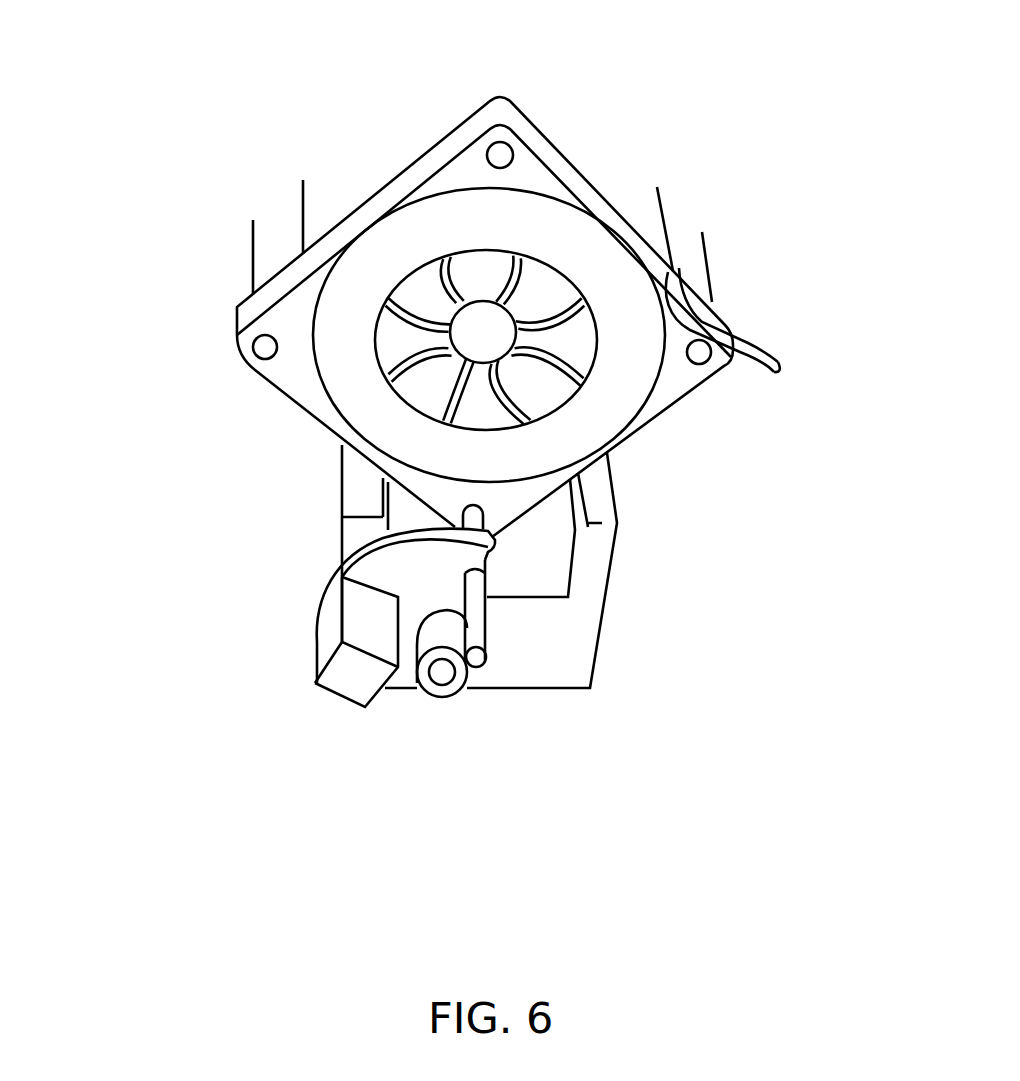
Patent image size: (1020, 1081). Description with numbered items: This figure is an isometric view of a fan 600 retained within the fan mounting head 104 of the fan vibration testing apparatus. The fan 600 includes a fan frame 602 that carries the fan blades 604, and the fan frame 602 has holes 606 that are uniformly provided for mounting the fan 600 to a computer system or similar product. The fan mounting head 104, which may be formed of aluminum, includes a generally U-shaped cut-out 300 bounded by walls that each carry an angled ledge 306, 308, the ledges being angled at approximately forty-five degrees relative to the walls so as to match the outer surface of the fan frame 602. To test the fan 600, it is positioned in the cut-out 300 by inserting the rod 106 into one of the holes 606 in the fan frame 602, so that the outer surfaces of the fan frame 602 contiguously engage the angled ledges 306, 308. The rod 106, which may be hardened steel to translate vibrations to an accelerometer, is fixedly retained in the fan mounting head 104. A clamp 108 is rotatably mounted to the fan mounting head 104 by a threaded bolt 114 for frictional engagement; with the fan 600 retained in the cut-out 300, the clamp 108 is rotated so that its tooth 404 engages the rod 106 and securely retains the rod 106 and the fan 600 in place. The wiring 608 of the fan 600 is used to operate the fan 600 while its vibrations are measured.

The fan 600 is at (357, 188).
The fan frame 602 is at (263, 380).
The fan blades 604 is at (517, 275).
The holes 606 is at (252, 343).
The wiring 608 is at (779, 358).
The cut-out 300 is at (543, 580).
The angled ledge 306 is at (583, 528).
The angled ledge 308 is at (382, 505).
The fan mounting head 104 is at (598, 657).
The clamp 108 is at (322, 592).
The tooth 404 is at (460, 572).
The rod 106 is at (485, 665).
The threaded bolt 114 is at (450, 690).